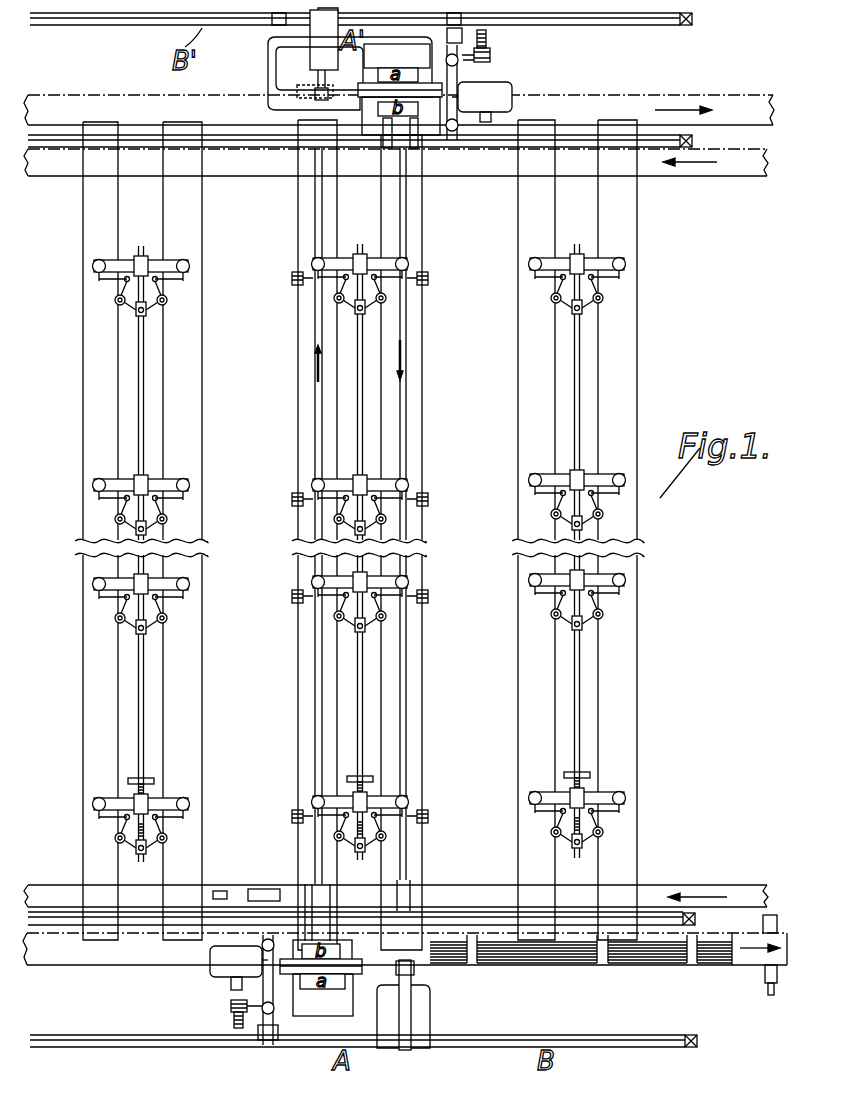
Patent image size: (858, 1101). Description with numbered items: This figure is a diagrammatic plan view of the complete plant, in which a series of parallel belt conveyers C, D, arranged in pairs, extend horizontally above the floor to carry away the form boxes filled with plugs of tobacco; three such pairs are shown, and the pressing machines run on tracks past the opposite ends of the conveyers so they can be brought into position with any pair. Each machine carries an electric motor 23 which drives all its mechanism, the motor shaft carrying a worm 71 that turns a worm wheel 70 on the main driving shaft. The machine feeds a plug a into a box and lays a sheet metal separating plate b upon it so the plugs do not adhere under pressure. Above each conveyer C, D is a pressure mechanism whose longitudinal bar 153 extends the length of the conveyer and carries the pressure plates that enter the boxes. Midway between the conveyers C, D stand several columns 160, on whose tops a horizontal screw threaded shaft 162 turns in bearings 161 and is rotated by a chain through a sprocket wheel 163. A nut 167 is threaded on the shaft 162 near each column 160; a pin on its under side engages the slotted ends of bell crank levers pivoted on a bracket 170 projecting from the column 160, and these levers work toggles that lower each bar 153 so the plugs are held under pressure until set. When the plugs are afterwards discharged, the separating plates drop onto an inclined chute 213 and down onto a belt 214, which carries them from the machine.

The electric motor 23 is at (361, 525).
The worm wheel 70 is at (485, 35).
The worm 71 is at (490, 53).
The longitudinal bar 153 is at (405, 712).
The column 160 is at (163, 262).
The bearing 161 is at (143, 258).
The screw threaded shaft 162 is at (358, 760).
The sprocket wheel 163 is at (410, 757).
The nut 167 is at (137, 307).
The bracket 170 is at (342, 823).
The inclined chute 213 is at (135, 958).
The belt 214 is at (243, 898).
The belt conveyer C is at (90, 447).
The belt conveyer D is at (193, 445).
The plug a is at (498, 958).
The separating plate b is at (262, 903).